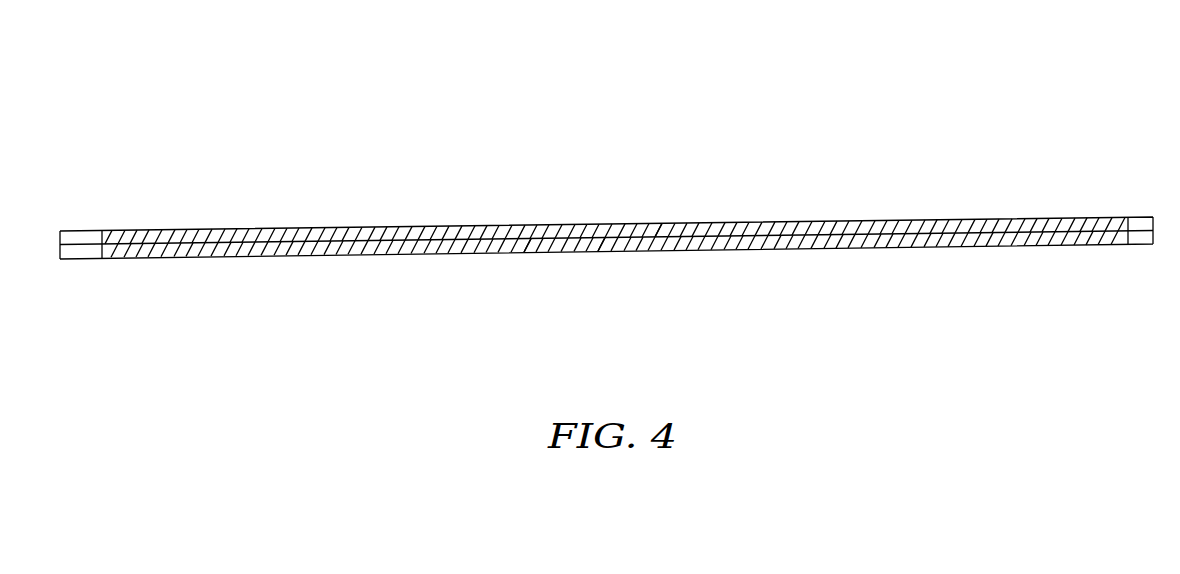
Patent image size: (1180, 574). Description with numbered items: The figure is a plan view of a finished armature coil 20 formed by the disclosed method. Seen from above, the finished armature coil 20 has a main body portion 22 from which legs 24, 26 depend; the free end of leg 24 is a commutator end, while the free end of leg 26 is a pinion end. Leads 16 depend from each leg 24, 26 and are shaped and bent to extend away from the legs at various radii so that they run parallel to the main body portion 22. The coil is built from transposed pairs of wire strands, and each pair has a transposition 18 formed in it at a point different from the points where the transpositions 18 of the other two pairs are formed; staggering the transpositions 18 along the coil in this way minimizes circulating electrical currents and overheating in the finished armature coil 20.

The leads 16 is at (78, 261).
The transposition 18 is at (657, 227).
The finished armature coil 20 is at (815, 104).
The main body portion 22 is at (832, 217).
The leg 24 is at (1042, 215).
The leg 26 is at (177, 228).